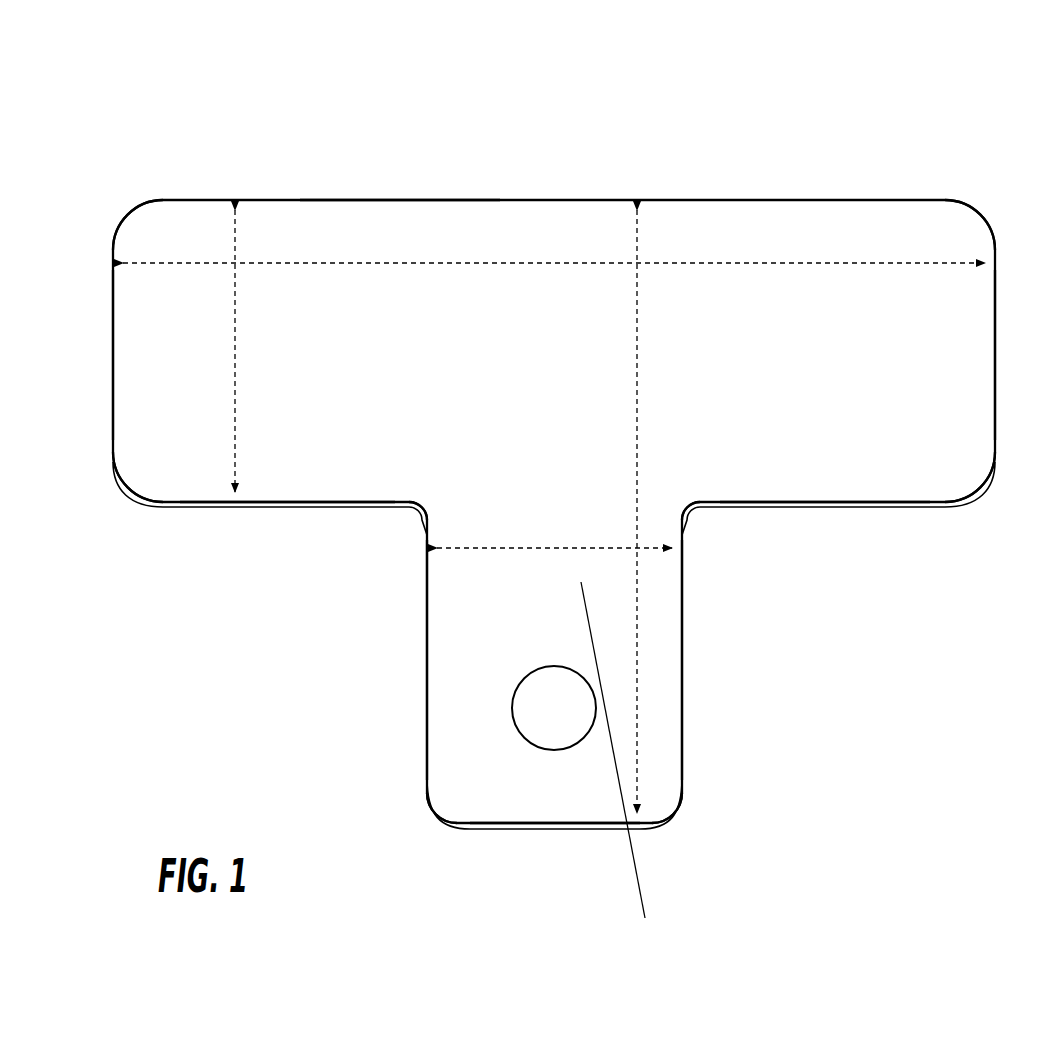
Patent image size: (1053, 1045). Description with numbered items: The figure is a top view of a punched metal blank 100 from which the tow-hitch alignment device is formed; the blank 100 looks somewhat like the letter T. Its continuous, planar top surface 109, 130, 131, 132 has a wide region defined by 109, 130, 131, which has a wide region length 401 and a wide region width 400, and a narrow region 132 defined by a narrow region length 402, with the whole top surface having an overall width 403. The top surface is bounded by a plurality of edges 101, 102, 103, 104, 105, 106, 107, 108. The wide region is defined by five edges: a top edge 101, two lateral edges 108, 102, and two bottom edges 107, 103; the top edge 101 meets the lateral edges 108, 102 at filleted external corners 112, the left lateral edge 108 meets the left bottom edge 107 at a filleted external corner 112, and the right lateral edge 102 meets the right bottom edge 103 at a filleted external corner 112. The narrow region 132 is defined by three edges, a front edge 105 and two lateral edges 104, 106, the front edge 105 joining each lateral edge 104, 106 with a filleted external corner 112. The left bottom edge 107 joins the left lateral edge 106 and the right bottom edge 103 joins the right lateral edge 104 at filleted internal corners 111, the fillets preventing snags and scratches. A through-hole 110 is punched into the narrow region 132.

The punched metal blank 100 is at (952, 108).
The top edge 101 is at (362, 198).
The right lateral edge 102 is at (996, 333).
The right bottom edge 103 is at (858, 503).
The right lateral edge 104 is at (683, 720).
The front edge 105 is at (588, 815).
The left lateral edge 106 is at (427, 707).
The left bottom edge 107 is at (215, 502).
The left lateral edge 108 is at (113, 333).
The top surface 109 is at (273, 350).
The through-hole 110 is at (547, 720).
The internal corner 111 is at (412, 507).
The external corner 112 is at (147, 200).
The top surface 130 is at (568, 348).
The top surface 131 is at (825, 253).
The narrow region 132 is at (623, 767).
The wide region width 400 is at (237, 428).
The wide region length 401 is at (748, 262).
The narrow region length 402 is at (610, 548).
The overall width 403 is at (637, 674).